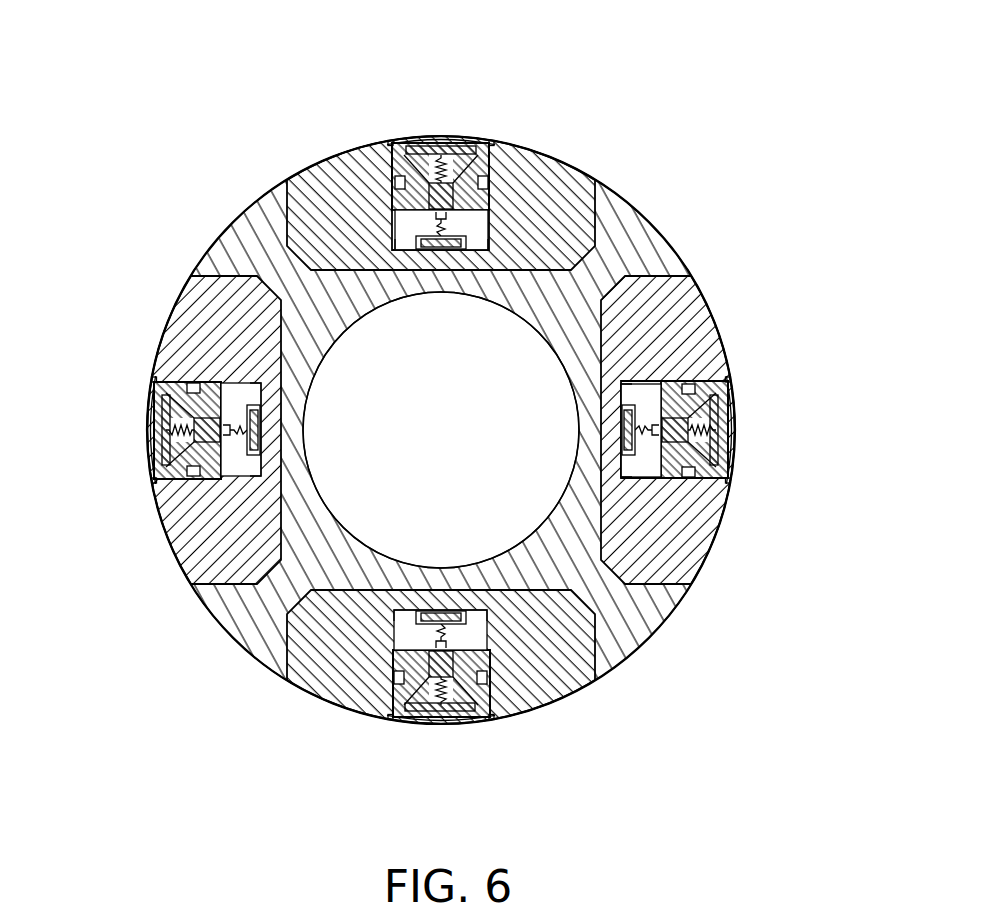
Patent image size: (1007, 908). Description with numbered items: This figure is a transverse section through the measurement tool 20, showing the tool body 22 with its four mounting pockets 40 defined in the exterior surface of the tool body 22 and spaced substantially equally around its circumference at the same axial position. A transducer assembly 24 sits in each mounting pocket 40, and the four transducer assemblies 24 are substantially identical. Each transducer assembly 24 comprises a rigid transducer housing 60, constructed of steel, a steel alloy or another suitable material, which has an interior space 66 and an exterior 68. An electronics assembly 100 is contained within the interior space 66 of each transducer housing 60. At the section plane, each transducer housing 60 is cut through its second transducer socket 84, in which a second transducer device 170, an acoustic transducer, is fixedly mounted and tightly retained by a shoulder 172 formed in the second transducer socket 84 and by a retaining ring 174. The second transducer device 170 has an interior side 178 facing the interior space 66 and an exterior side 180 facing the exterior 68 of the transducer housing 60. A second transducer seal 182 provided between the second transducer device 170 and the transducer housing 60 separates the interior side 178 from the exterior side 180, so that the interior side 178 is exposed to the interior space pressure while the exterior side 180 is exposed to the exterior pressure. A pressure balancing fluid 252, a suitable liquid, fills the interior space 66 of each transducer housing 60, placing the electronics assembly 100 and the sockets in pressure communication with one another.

The measurement tool 20 is at (618, 120).
The tool body 22 is at (636, 248).
The transducer assembly 24 is at (527, 139).
The mounting pocket 40 is at (290, 219).
The transducer housing 60 is at (358, 173).
The interior space 66 is at (287, 344).
The exterior 68 is at (371, 137).
The second transducer socket 84 is at (531, 141).
The electronics assembly 100 is at (623, 437).
The second transducer device 170 is at (397, 142).
The shoulder 172 is at (493, 211).
The retaining ring 174 is at (482, 143).
The interior side 178 is at (658, 467).
The exterior side 180 is at (448, 139).
The second transducer seal 182 is at (690, 478).
The pressure balancing fluid 252 is at (622, 411).